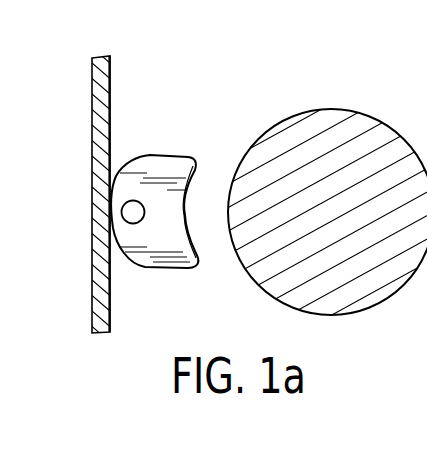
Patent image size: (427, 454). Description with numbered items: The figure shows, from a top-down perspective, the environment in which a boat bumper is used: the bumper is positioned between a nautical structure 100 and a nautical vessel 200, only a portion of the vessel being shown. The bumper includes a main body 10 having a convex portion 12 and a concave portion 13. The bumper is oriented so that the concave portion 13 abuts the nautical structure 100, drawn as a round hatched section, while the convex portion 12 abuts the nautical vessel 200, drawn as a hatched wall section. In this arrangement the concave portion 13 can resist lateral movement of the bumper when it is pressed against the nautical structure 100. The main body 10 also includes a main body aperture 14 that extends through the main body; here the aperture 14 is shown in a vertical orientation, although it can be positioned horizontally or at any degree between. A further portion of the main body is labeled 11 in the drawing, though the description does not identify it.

The main body 10 is at (156, 183).
The lower portion of clip 11 is at (156, 243).
The convex portion 12 is at (115, 177).
The concave portion 13 is at (190, 226).
The main body aperture 14 is at (131, 214).
The nautical structure 100 is at (382, 146).
The nautical vessel 200 is at (92, 66).